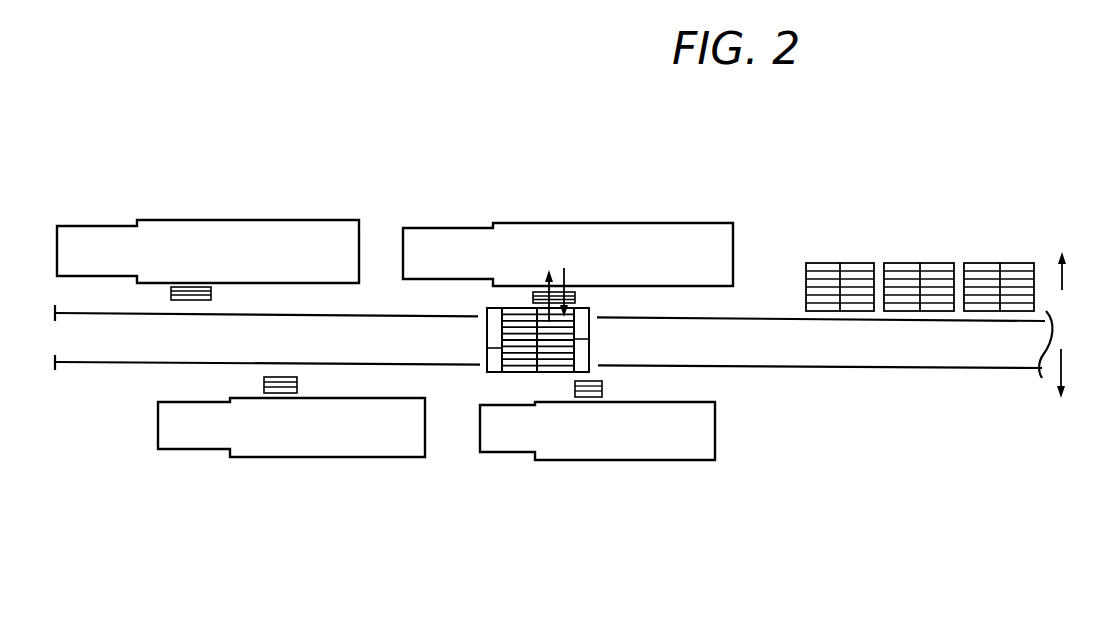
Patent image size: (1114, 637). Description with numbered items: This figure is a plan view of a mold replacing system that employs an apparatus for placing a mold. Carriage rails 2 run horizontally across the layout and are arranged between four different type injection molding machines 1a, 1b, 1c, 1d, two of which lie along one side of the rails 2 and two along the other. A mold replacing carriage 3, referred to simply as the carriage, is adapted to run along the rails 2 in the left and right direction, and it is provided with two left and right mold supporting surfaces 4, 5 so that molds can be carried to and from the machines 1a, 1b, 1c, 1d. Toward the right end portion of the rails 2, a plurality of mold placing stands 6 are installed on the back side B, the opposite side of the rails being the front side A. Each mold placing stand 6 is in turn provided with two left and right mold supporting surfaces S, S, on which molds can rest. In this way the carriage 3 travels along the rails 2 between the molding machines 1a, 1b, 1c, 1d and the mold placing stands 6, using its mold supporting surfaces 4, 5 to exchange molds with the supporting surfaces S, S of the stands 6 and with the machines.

The injection molding machine 1a is at (585, 233).
The injection molding machine 1b is at (605, 450).
The injection molding machine 1c is at (233, 235).
The injection molding machine 1d is at (282, 448).
The carriage rails 2 is at (793, 320).
The mold replacing carriage 3 is at (486, 379).
The mold supporting surface 4 is at (507, 345).
The mold supporting surface 5 is at (563, 343).
The mold placing stand 6 is at (980, 255).
The mold supporting surface S is at (859, 263).
The front side A is at (1068, 368).
The back side B is at (1068, 282).